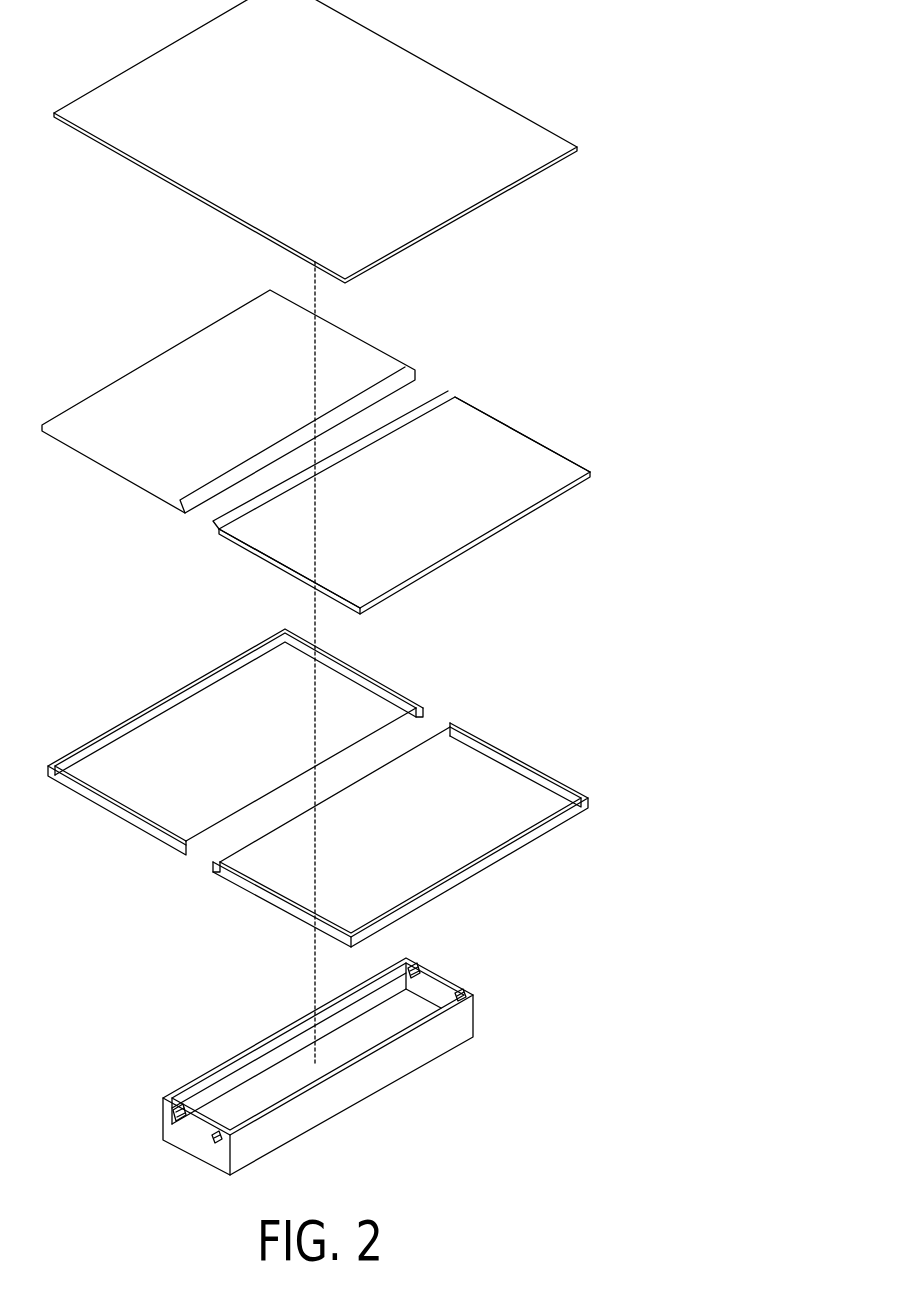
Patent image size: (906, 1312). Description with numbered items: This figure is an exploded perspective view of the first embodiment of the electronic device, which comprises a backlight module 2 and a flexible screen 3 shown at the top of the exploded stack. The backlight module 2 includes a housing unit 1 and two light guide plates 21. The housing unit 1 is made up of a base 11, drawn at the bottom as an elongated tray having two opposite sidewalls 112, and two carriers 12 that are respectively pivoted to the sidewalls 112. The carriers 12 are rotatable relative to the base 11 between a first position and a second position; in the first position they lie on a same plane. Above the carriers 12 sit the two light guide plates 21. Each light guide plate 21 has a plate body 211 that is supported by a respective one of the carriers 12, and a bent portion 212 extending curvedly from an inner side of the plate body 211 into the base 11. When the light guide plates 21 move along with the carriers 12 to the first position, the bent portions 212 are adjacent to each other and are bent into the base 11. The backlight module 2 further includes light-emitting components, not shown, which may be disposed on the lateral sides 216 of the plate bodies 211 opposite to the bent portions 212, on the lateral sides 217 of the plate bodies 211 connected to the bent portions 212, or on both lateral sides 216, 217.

The housing unit 1 is at (286, 1057).
The base 11 is at (193, 1155).
The sidewalls 112 is at (443, 982).
The carriers 12 is at (367, 677).
The backlight module 2 is at (312, 455).
The light guide plates 21 is at (312, 463).
The plate body 211 is at (100, 442).
The bent portion 212 is at (180, 510).
The lateral sides 216 is at (450, 558).
The lateral sides 217 is at (520, 430).
The flexible screen 3 is at (475, 83).